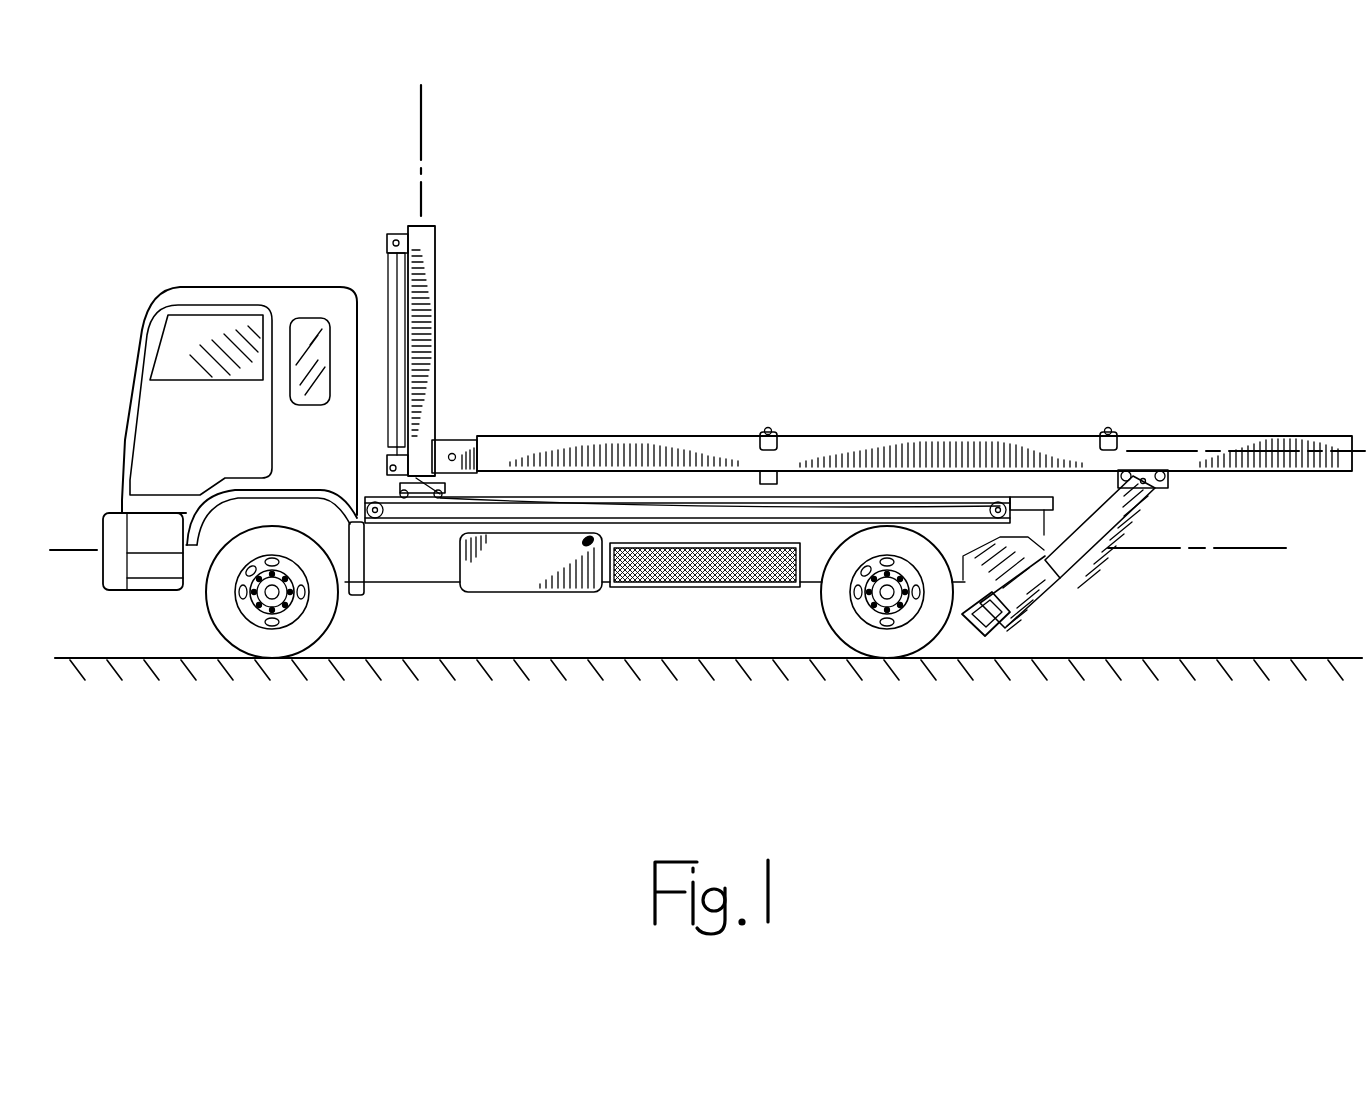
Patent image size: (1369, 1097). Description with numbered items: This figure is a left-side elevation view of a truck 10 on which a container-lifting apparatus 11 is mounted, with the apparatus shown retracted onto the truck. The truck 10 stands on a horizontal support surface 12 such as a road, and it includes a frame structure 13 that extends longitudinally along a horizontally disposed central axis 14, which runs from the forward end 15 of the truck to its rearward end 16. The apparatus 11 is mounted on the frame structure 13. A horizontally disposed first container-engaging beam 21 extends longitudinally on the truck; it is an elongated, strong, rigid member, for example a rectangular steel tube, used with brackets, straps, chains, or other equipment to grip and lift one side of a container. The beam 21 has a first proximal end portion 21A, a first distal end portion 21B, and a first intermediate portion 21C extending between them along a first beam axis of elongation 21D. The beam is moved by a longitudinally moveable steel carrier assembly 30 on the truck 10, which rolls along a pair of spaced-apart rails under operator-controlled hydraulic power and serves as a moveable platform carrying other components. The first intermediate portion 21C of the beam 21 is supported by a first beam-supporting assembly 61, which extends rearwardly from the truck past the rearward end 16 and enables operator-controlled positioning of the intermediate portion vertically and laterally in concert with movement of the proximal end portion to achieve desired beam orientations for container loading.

The truck 10 is at (220, 282).
The container-lifting apparatus 11 is at (433, 224).
The horizontal support surface 12 is at (1280, 657).
The frame structure 13 is at (423, 573).
The central axis 14 is at (1240, 549).
The forward end 15 is at (96, 571).
The rearward end 16 is at (1050, 522).
The first container-engaging beam 21 is at (1010, 438).
The first proximal end portion 21A is at (500, 437).
The first distal end portion 21B is at (1340, 440).
The first intermediate portion 21C is at (802, 438).
The first beam axis of elongation 21D is at (1172, 447).
The carrier assembly 30 is at (446, 492).
The first beam-supporting assembly 61 is at (970, 648).